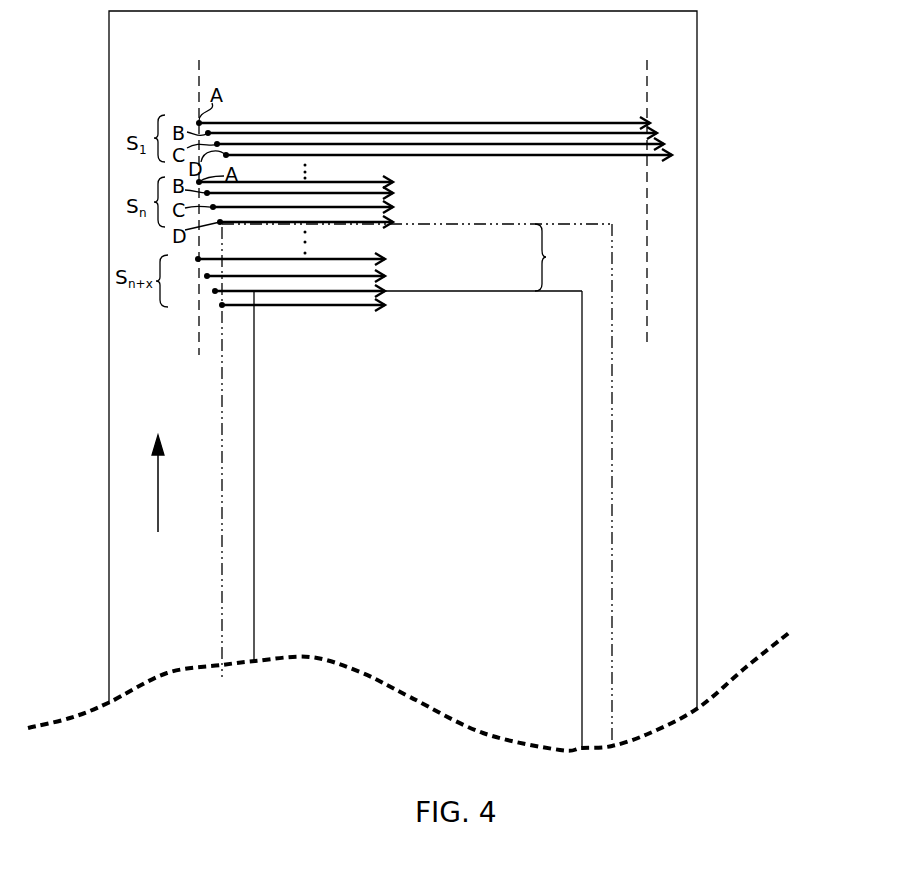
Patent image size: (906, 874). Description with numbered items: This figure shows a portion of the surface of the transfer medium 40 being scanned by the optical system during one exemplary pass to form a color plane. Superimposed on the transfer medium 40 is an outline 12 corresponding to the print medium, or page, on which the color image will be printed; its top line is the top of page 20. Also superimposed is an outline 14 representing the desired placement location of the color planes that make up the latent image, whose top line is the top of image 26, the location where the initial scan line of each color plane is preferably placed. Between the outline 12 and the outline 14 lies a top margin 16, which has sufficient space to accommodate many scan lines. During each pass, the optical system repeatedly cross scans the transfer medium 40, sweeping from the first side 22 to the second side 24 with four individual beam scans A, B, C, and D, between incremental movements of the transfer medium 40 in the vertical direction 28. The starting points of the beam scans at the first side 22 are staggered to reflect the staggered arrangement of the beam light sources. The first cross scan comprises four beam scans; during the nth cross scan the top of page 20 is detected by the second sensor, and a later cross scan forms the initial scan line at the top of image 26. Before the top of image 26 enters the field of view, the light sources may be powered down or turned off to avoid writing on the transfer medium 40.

The outline of the print medium 12 is at (612, 472).
The outline of the image 14 is at (582, 520).
The top margin 16 is at (556, 257).
The top of page (TOP) 20 is at (452, 224).
The first side 22 is at (200, 78).
The second side 24 is at (647, 78).
The top of image (TOI) 26 is at (416, 291).
The vertical direction 28 is at (157, 483).
The transfer medium 40 is at (697, 257).